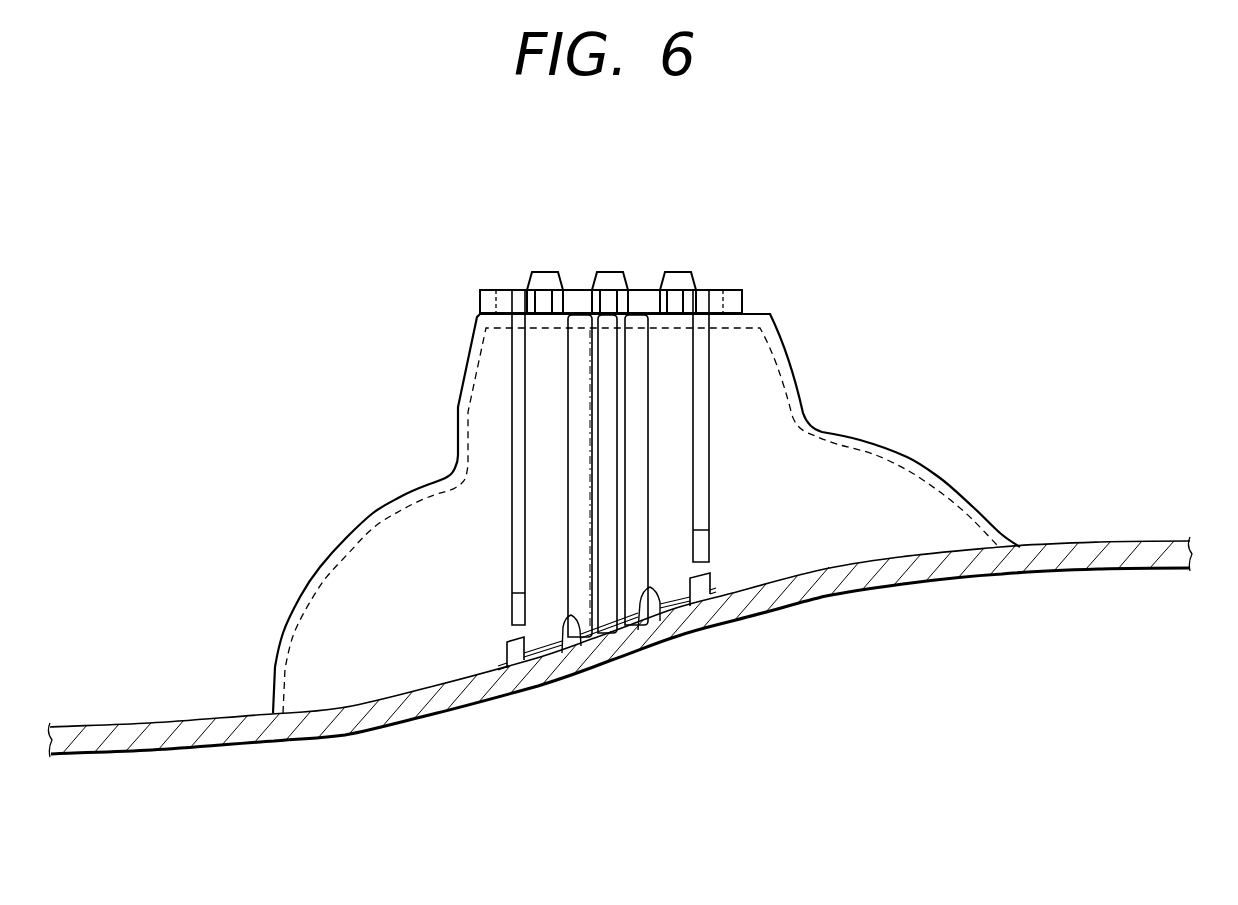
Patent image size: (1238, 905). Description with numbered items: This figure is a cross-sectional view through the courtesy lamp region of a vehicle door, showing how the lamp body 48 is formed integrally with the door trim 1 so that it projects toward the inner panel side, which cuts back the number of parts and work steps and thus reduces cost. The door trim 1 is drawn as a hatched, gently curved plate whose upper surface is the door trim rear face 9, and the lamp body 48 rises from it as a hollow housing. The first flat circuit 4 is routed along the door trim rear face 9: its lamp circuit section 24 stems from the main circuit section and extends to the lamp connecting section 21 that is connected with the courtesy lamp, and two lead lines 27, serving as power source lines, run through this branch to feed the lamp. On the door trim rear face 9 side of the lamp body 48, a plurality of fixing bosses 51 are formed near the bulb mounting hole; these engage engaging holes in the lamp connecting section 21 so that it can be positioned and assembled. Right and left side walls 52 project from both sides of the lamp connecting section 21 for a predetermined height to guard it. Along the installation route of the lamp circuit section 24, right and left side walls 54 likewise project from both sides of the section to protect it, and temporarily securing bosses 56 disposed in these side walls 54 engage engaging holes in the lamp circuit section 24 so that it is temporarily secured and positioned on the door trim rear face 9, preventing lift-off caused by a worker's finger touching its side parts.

The door trim 1 is at (1135, 565).
The first flat circuit 4 is at (566, 527).
The door trim rear face 9 is at (1115, 541).
The lamp connecting section 21 is at (733, 285).
The lamp circuit section 24 is at (567, 464).
The lead lines (power source lines) 27 is at (592, 368).
The lamp body 48 is at (803, 390).
The fixing bosses 51 is at (544, 270).
The right and left side walls 52 is at (507, 563).
The right and left side walls 54 is at (503, 653).
The temporarily securing bosses 56 is at (550, 657).